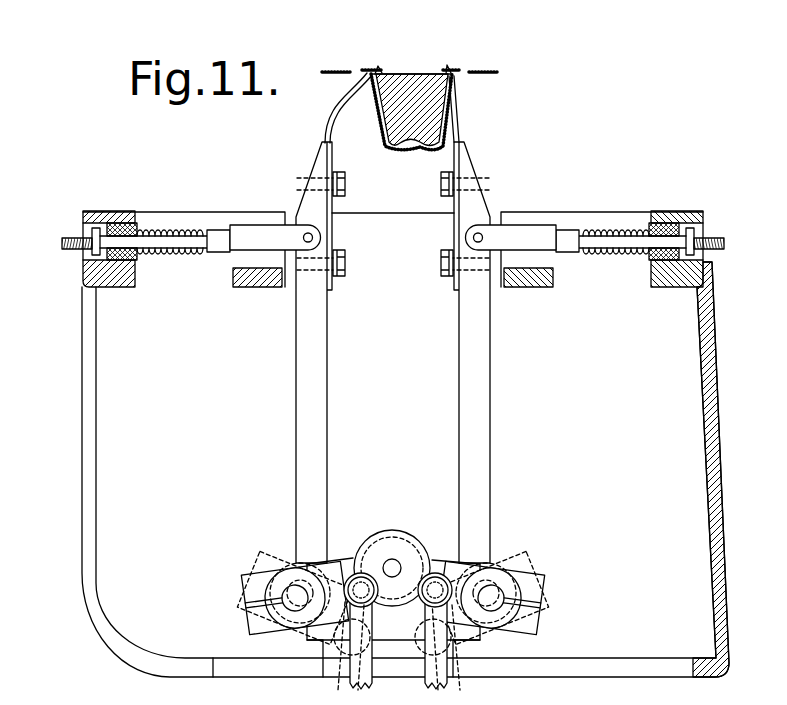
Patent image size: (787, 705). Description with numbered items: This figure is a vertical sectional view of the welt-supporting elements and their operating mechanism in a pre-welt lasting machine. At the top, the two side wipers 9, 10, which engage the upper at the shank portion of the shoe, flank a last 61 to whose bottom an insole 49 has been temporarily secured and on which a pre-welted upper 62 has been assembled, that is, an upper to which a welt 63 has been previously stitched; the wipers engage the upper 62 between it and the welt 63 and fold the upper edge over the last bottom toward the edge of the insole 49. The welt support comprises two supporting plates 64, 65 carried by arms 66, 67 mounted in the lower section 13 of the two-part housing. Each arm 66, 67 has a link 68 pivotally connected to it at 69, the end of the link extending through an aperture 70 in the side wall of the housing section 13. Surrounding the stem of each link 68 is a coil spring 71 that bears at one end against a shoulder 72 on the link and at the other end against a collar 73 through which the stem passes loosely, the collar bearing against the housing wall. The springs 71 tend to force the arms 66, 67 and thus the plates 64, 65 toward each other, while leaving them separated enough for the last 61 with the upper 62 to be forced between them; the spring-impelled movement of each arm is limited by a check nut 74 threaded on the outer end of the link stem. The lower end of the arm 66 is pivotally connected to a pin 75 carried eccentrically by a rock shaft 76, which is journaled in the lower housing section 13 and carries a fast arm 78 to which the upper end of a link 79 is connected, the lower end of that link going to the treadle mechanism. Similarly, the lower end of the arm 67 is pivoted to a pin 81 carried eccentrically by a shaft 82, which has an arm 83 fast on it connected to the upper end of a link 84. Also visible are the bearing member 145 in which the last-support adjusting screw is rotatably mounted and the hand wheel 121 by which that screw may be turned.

The side wiper 9 is at (485, 70).
The side wiper 10 is at (330, 70).
The lower section of housing 13 is at (720, 446).
The insole 49 is at (416, 72).
The last 61 is at (406, 78).
The pre-welted upper 62 is at (393, 124).
The welt 63 is at (375, 68).
The welt-supporting plate 64 is at (458, 112).
The welt-supporting plate 65 is at (366, 96).
The arm 66 is at (490, 393).
The arm 67 is at (300, 376).
The link 68 is at (218, 242).
The pivot 69 is at (308, 232).
The aperture 70 is at (120, 228).
The coil spring 71 is at (186, 256).
The shoulder 72 is at (232, 258).
The collar 73 is at (137, 262).
The check nut 74 is at (95, 240).
The pin 75 is at (485, 543).
The rock shaft 76 is at (503, 596).
The arm 78 is at (447, 627).
The link 79 is at (448, 675).
The pin 81 is at (305, 545).
The shaft 82 is at (290, 594).
The arm 83 is at (340, 575).
The link 84 is at (347, 680).
The hand wheel 121 is at (376, 532).
The bearing member 145 is at (438, 548).